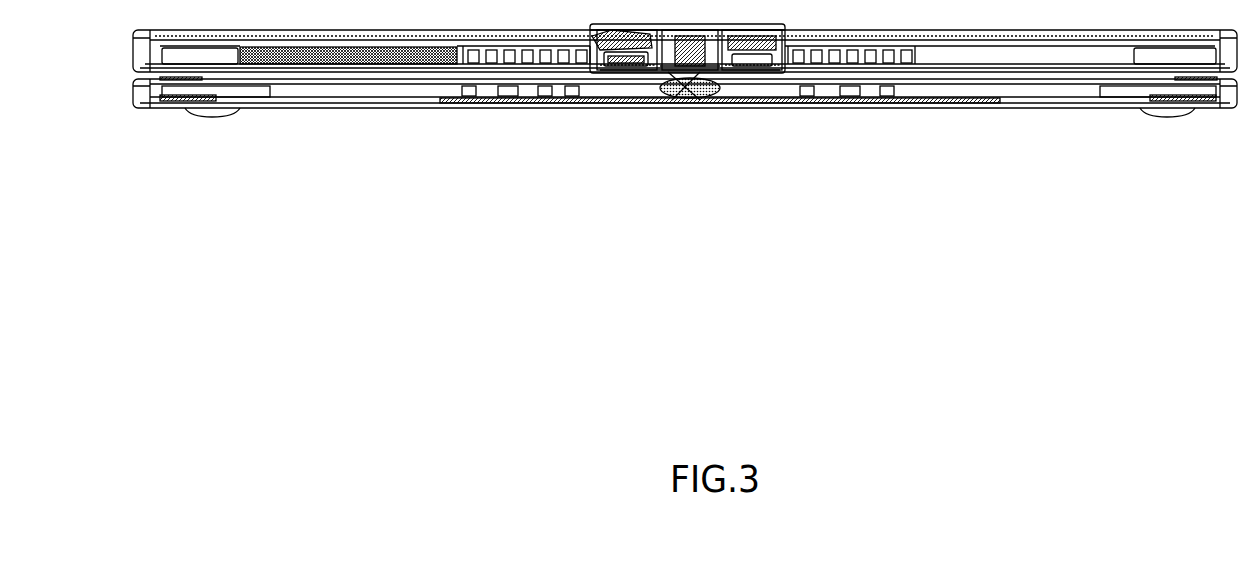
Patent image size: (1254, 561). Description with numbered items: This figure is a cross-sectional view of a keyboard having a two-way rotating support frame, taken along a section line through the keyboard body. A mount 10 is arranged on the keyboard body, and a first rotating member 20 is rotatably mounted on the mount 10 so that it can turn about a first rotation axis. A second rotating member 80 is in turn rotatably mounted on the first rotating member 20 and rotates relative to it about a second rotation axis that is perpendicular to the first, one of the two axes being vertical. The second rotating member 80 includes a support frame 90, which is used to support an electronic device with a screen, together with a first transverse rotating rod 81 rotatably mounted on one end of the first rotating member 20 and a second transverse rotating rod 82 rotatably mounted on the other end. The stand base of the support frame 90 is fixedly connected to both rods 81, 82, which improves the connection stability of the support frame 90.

The mount 10 is at (683, 100).
The first rotating member 20 is at (630, 78).
The second rotating member 80 is at (872, 139).
The first transverse rotating rod 81 is at (780, 52).
The second transverse rotating rod 82 is at (587, 40).
The support frame 90 is at (905, 47).